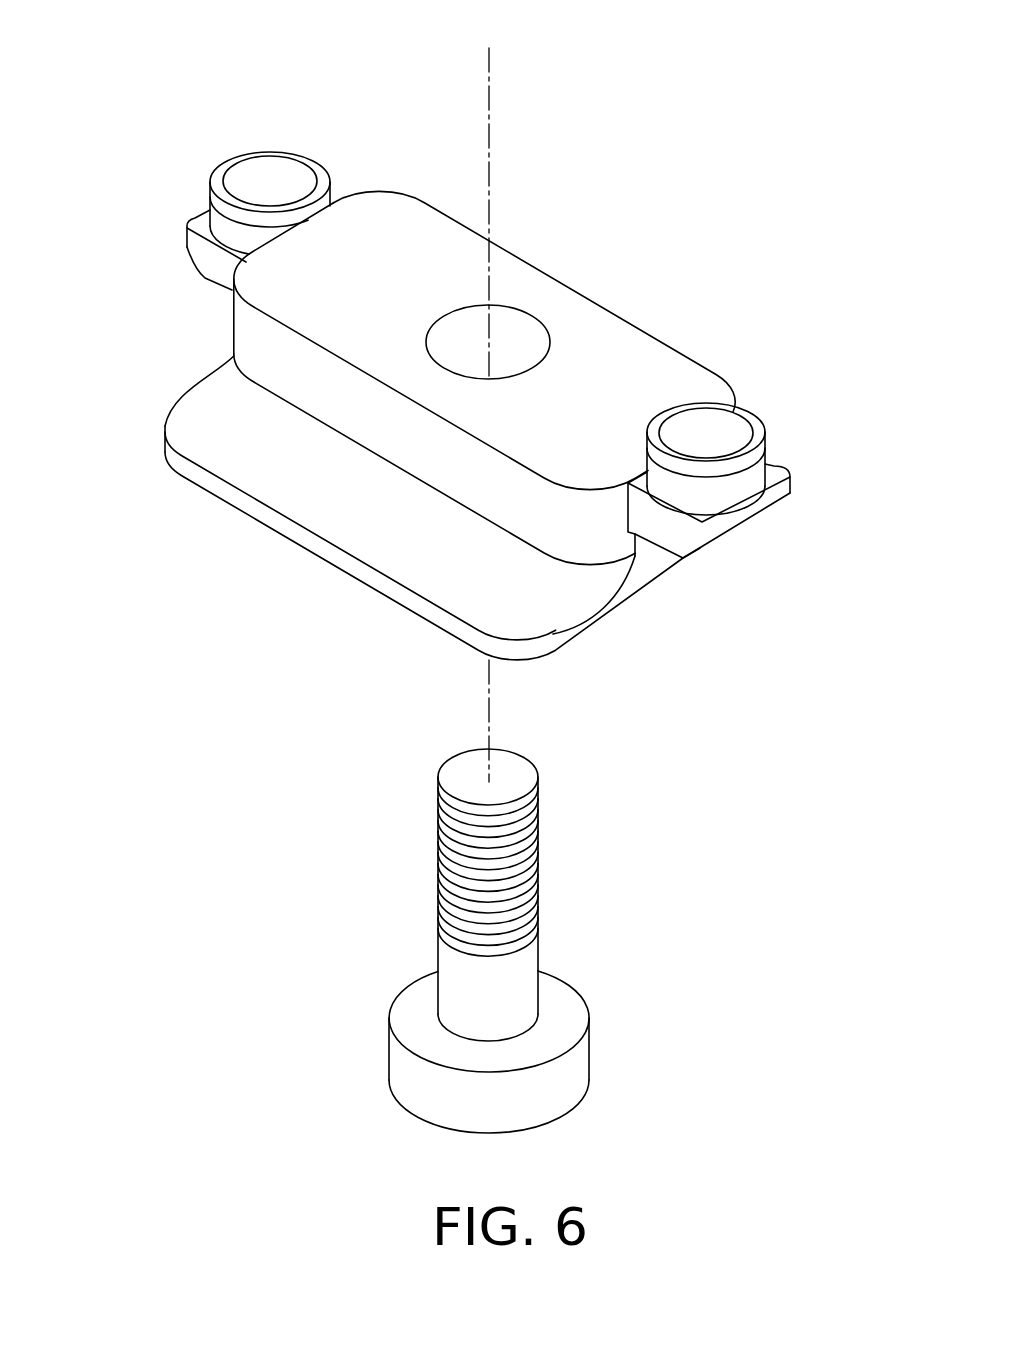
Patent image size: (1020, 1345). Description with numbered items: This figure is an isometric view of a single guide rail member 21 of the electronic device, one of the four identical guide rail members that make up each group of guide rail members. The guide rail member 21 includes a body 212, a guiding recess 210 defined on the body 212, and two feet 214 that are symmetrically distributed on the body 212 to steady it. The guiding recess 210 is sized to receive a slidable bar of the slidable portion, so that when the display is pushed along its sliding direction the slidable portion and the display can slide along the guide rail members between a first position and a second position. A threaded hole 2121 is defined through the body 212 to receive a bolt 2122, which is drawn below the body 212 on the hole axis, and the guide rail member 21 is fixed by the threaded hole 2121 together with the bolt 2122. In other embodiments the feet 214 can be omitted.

The guide rail member 21 is at (353, 90).
The guiding recess 210 is at (233, 430).
The body 212 is at (552, 356).
The threaded hole 2121 is at (502, 338).
The bolt 2122 is at (520, 777).
The feet 214 is at (712, 488).